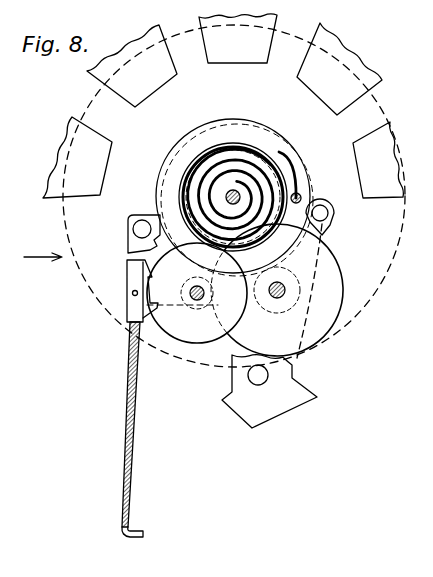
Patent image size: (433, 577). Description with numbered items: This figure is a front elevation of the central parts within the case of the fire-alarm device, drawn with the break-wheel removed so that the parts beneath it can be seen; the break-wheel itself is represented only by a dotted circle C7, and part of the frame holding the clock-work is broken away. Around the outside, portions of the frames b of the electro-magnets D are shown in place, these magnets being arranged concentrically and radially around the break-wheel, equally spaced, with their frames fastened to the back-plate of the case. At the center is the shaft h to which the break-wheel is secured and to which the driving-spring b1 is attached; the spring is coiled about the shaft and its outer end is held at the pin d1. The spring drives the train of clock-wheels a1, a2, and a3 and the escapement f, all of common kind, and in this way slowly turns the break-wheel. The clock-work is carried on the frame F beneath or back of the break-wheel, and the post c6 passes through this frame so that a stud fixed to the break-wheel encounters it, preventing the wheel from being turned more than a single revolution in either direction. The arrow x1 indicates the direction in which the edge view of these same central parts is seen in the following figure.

The frame of electro-magnet b is at (223, 106).
The electro-magnets D is at (30, 147).
The shaft h is at (233, 197).
The clock-wheel a1 is at (234, 197).
The driving-spring b1 is at (272, 158).
The spring pin d1 is at (300, 194).
The post c6 is at (133, 229).
The arrow x1 is at (43, 248).
The frame circle C7 is at (426, 258).
The clock-wheel a3 is at (197, 293).
The clock-wheel a2 is at (277, 290).
The escapement f is at (130, 398).
The frame F is at (269, 391).